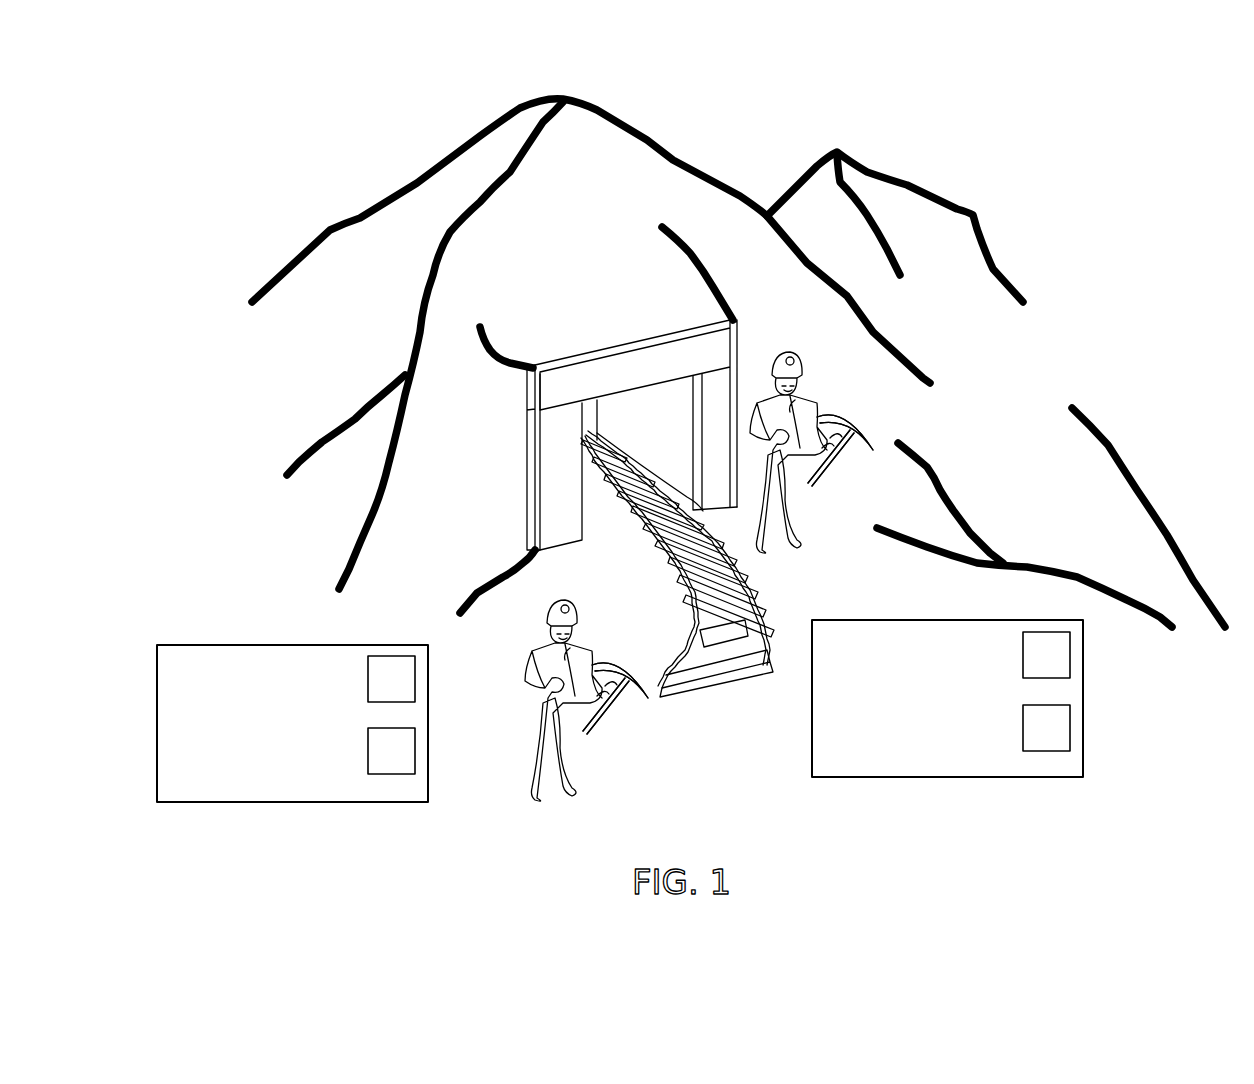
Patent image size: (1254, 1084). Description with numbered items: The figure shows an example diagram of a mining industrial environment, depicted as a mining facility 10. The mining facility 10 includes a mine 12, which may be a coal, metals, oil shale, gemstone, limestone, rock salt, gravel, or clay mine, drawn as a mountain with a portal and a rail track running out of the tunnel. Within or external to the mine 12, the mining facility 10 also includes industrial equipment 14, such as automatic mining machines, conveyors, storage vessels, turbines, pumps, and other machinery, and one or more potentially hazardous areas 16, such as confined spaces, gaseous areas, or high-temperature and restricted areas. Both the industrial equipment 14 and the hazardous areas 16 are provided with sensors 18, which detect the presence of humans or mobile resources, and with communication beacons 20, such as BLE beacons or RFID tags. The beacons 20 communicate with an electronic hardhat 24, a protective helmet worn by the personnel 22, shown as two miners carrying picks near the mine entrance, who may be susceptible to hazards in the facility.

The mining facility 10 is at (1042, 158).
The mine 12 is at (507, 465).
The industrial equipment 14 is at (291, 802).
The hazardous areas 16 is at (946, 777).
The sensors 18 is at (415, 679).
The communication beacons 20 is at (415, 750).
The personnel 22 is at (822, 400).
The electronic hardhat 24 is at (780, 347).